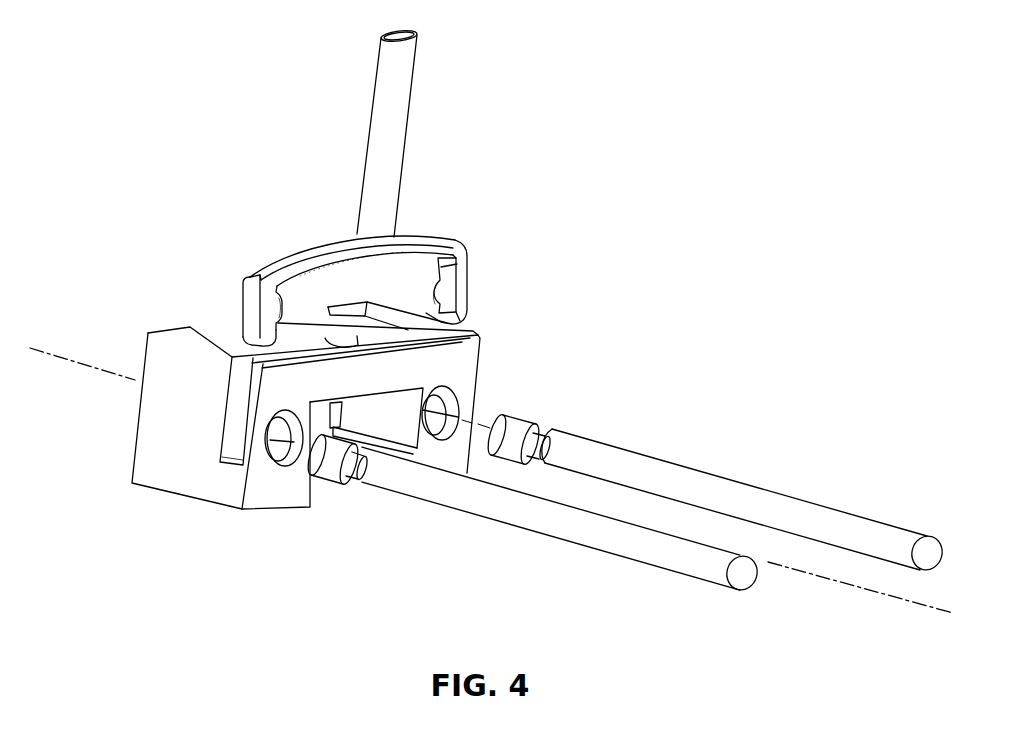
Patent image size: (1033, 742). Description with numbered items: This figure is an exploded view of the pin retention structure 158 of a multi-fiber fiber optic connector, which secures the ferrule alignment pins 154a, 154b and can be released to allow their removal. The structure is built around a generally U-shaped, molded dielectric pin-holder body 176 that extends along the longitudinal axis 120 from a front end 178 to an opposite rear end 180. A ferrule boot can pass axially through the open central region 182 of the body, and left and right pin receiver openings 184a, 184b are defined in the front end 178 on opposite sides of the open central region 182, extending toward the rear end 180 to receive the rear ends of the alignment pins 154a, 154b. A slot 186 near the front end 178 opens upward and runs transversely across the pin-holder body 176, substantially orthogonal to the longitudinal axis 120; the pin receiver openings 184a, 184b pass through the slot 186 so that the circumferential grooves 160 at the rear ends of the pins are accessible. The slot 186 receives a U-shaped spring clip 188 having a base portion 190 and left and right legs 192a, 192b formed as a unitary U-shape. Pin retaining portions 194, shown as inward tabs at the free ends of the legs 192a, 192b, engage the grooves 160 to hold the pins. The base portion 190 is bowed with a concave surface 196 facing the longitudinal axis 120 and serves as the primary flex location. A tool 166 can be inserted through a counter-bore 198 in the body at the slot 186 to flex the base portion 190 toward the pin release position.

The longitudinal axis 120 is at (112, 372).
The ferrule alignment pin 154a is at (873, 525).
The ferrule alignment pin 154b is at (727, 578).
The pin retention structure 158 is at (518, 141).
The circumferential groove 160 is at (544, 429).
The tool 166 is at (386, 82).
The pin-holder body 176 is at (186, 490).
The front end 178 is at (470, 360).
The rear end 180 is at (166, 331).
The open central region 182 is at (325, 500).
The pin receiver opening 184a is at (447, 410).
The pin receiver opening 184b is at (282, 462).
The slot 186 is at (236, 407).
The U-shaped spring clip 188 is at (256, 270).
The base portion 190 is at (333, 246).
The left leg 192a is at (472, 266).
The right leg 192b is at (250, 294).
The pin retaining portion 194 is at (264, 323).
The concave surface 196 is at (337, 266).
The counter-bore 198 is at (360, 335).